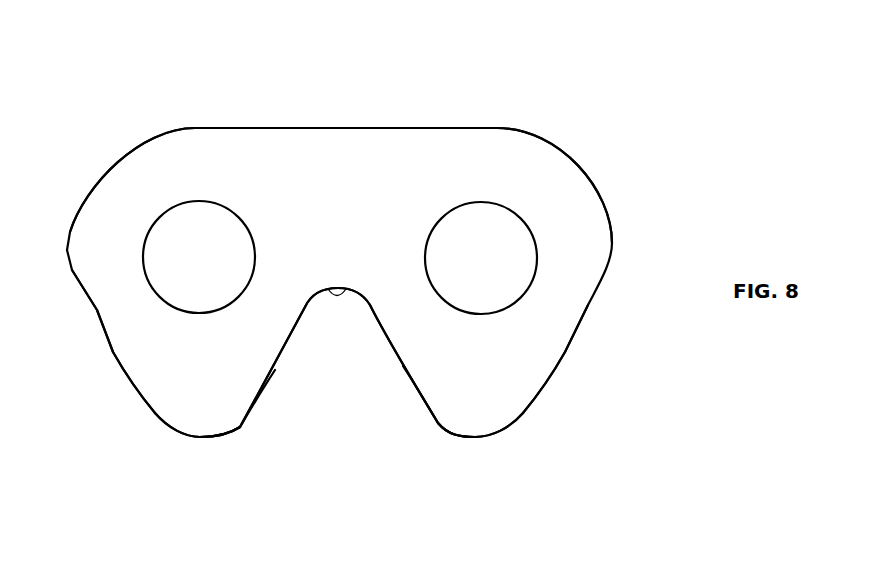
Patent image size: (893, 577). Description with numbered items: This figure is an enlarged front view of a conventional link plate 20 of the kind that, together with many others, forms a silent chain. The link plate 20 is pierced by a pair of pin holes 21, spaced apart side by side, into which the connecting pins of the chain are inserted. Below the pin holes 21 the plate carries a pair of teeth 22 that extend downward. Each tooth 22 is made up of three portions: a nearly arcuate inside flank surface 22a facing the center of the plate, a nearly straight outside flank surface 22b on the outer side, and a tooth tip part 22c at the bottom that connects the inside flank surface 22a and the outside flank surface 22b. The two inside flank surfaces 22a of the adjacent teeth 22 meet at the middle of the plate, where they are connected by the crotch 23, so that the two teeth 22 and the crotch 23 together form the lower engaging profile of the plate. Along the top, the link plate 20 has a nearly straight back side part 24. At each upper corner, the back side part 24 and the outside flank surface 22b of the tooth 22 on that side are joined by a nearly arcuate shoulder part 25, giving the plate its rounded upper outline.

The link plate 20 is at (350, 72).
The pin hole 21 is at (230, 215).
The tooth 22 is at (222, 416).
The inside flank surface 22a is at (395, 355).
The outside flank surface 22b is at (118, 352).
The tooth tip part 22c is at (200, 437).
The crotch 23 is at (345, 288).
The back side part 24 is at (327, 127).
The shoulder part 25 is at (97, 175).